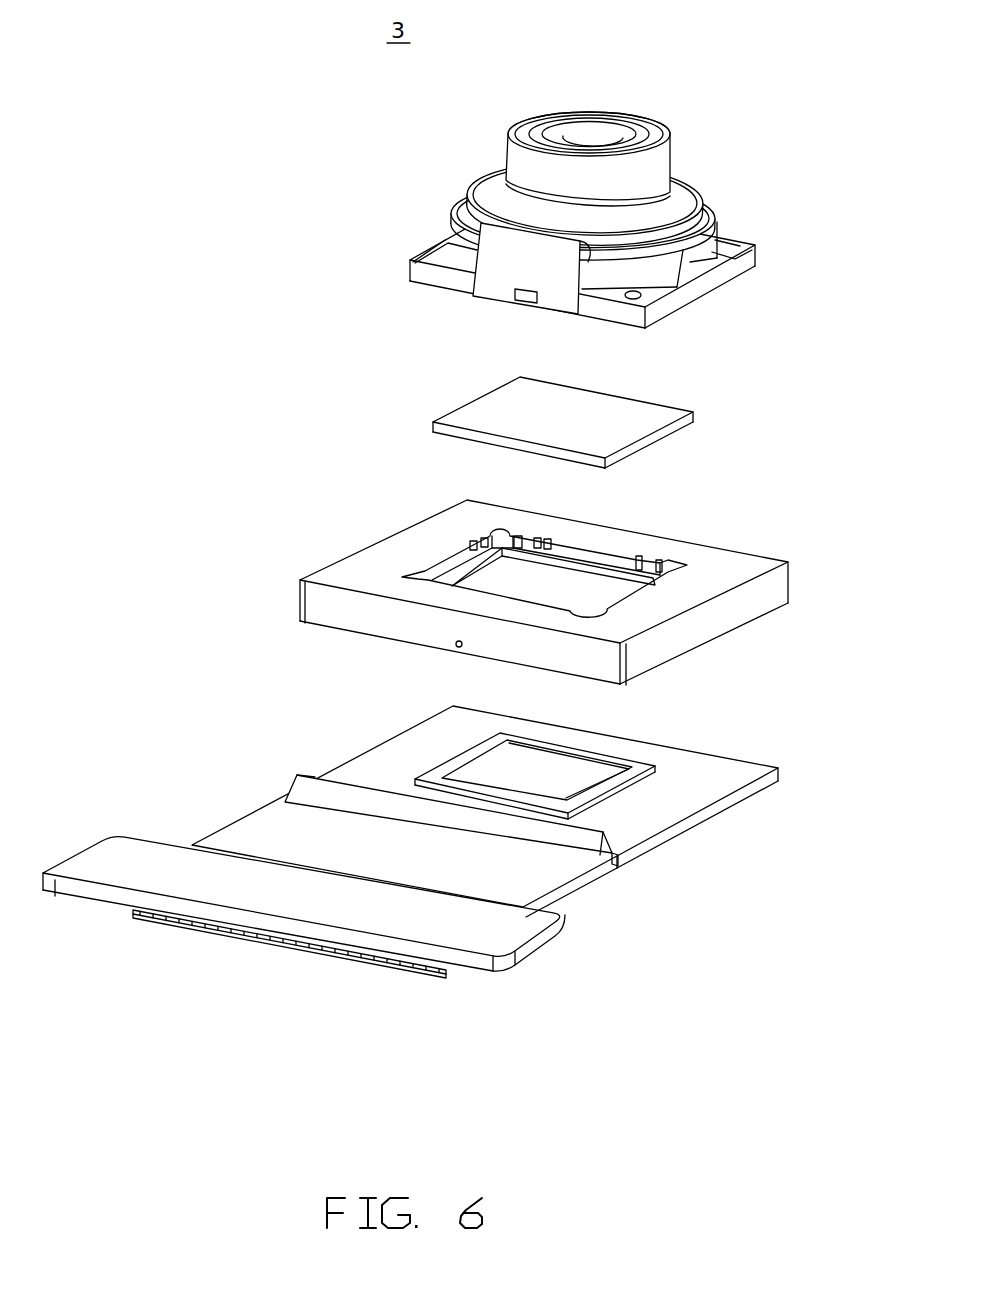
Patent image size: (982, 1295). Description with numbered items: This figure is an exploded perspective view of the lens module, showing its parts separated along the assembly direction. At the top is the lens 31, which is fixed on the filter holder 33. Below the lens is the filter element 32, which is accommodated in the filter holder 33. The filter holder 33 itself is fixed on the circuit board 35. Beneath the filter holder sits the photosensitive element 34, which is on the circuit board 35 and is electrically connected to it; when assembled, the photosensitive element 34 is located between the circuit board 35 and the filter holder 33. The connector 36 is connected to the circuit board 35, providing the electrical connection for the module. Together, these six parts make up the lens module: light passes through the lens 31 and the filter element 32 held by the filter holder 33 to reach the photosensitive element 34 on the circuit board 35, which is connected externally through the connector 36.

The lens 31 is at (697, 205).
The filter element 32 is at (643, 412).
The filter holder 33 is at (725, 560).
The photosensitive element 34 is at (588, 770).
The circuit board 35 is at (667, 810).
The connector 36 is at (340, 956).